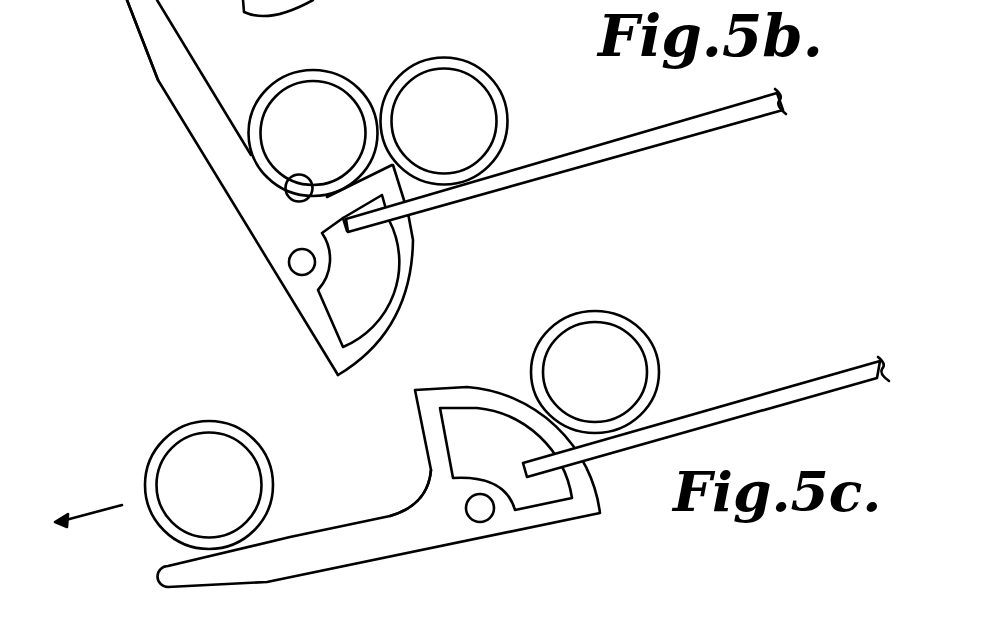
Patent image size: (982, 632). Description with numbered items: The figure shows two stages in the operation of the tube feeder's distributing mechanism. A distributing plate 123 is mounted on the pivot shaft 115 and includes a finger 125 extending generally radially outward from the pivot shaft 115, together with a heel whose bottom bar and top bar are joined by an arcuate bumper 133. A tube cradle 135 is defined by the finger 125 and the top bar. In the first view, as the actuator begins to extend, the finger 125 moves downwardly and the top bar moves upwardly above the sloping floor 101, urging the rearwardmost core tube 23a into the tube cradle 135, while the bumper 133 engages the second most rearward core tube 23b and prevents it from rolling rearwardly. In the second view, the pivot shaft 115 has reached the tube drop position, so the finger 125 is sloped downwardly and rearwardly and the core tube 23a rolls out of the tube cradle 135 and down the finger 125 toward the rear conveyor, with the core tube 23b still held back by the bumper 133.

In FIG. 5B, the floor 101 is at (647, 150).
In FIG. 5C, the floor 101 is at (763, 413).
In FIG. 5B, the pivot shaft 115 is at (289, 268).
In FIG. 5C, the pivot shaft 115 is at (487, 521).
In FIG. 5B, the distributing plate 123 is at (222, 193).
In FIG. 5C, the distributing plate 123 is at (294, 584).
In FIG. 5B, the finger 125 is at (137, 34).
In FIG. 5B, the arcuate bumper 133 is at (408, 290).
In FIG. 5C, the arcuate bumper 133 is at (522, 407).
In FIG. 5B, the tube cradle 135 is at (286, 190).
In FIG. 5C, the tube cradle 135 is at (417, 497).
In FIG. 5B, the rearwardmost core tube 23a is at (322, 71).
In FIG. 5C, the rearwardmost core tube 23a is at (244, 434).
In FIG. 5B, the second most rearward core tube 23b is at (442, 58).
In FIG. 5C, the second most rearward core tube 23b is at (623, 318).